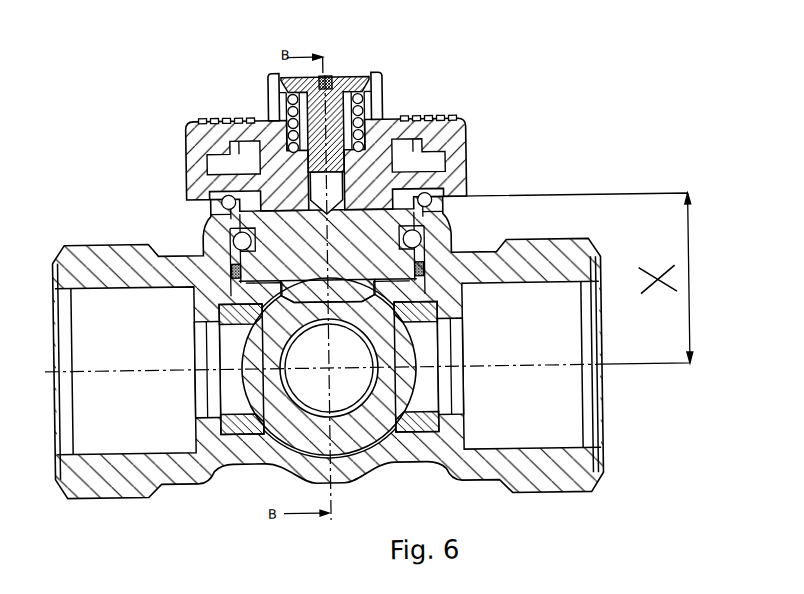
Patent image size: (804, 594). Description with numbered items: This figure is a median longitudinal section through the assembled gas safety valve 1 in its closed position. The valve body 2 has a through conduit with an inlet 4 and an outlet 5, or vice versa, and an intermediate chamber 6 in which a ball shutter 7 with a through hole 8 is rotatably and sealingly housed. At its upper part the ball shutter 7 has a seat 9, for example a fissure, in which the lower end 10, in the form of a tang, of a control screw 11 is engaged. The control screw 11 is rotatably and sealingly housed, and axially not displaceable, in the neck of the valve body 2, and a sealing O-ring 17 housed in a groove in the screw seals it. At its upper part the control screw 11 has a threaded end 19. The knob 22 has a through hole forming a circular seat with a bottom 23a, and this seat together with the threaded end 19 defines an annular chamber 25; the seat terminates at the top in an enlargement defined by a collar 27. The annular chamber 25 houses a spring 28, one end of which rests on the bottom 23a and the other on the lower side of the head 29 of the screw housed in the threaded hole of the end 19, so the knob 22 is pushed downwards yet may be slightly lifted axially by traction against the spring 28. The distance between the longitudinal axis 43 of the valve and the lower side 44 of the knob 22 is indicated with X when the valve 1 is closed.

The gas safety valve 1 is at (523, 142).
The valve body 2 is at (202, 478).
The inlet 4 is at (560, 488).
The outlet 5 is at (93, 248).
The intermediate chamber 6 is at (223, 422).
The ball shutter 7 is at (366, 429).
The through hole 8 is at (355, 403).
The seat 9 is at (320, 306).
The lower end 10 is at (415, 340).
The control screw 11 is at (262, 255).
The sealing O-ring 17 is at (439, 248).
The threaded end 19 is at (297, 103).
The knob 22 is at (200, 174).
The bottom 23a is at (390, 124).
The annular chamber 25 is at (296, 129).
The collar 27 is at (386, 82).
The spring 28 is at (367, 100).
The head 29 is at (352, 84).
The longitudinal axis 43 is at (635, 377).
The lower side 44 is at (468, 201).